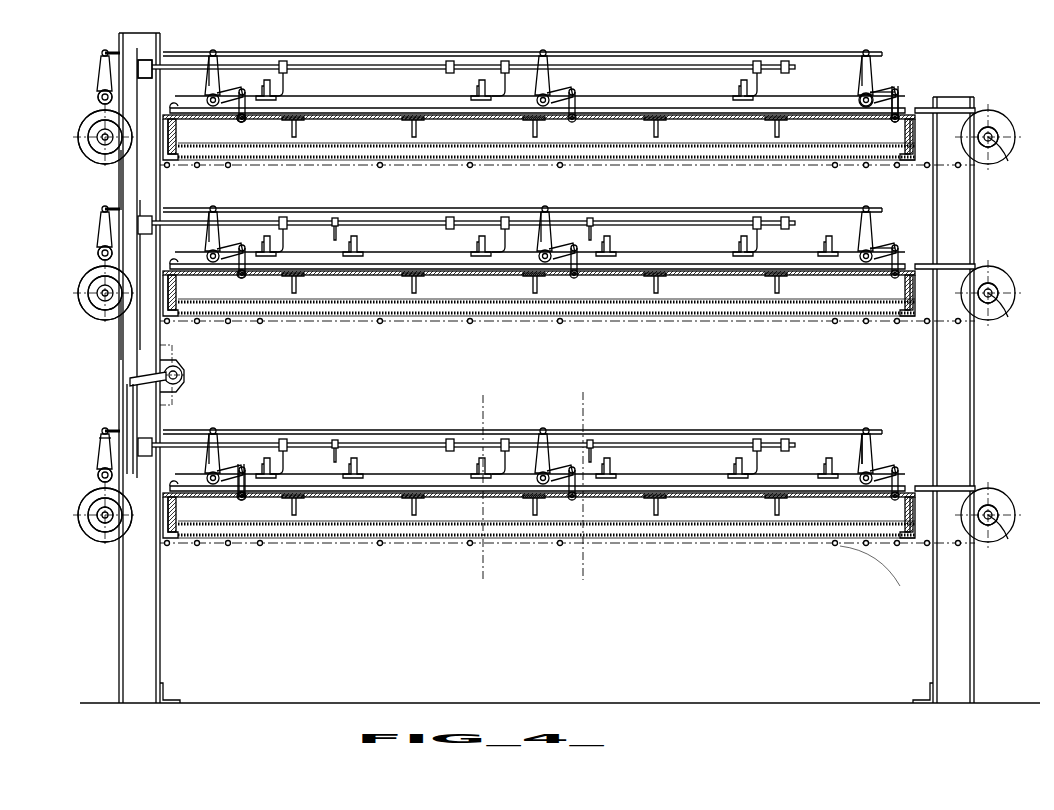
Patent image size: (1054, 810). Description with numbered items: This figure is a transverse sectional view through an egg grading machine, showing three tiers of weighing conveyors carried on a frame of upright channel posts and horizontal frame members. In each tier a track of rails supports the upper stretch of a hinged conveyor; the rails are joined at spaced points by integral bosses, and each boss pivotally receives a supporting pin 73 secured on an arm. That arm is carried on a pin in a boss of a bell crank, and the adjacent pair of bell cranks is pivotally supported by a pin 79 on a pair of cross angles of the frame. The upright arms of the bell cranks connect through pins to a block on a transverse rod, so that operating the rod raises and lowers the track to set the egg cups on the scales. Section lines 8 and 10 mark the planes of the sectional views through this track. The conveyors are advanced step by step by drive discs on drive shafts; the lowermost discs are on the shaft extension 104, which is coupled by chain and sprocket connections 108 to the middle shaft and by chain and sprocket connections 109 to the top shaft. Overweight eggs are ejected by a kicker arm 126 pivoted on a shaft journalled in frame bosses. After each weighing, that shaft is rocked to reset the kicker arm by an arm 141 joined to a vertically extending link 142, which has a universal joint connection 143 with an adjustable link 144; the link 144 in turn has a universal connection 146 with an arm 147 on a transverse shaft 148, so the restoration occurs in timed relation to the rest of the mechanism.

The section line 8- 8 is at (570, 581).
The section line 10- 10 is at (496, 581).
The supporting pin 73 is at (240, 116).
The pin 79 is at (864, 104).
The shaft extension 104 is at (67, 503).
The chain and sprocket connection 108 is at (120, 336).
The chain and sprocket connection 109 is at (120, 176).
The kicker arm 126 is at (502, 88).
The arm 141 is at (138, 72).
The vertically extending link 142 is at (137, 354).
The universal joint connection 143 is at (74, 445).
The adjustable link 144 is at (126, 398).
The universal connection 146 is at (130, 378).
The arm 147 is at (174, 386).
The transverse shaft 148 is at (178, 372).